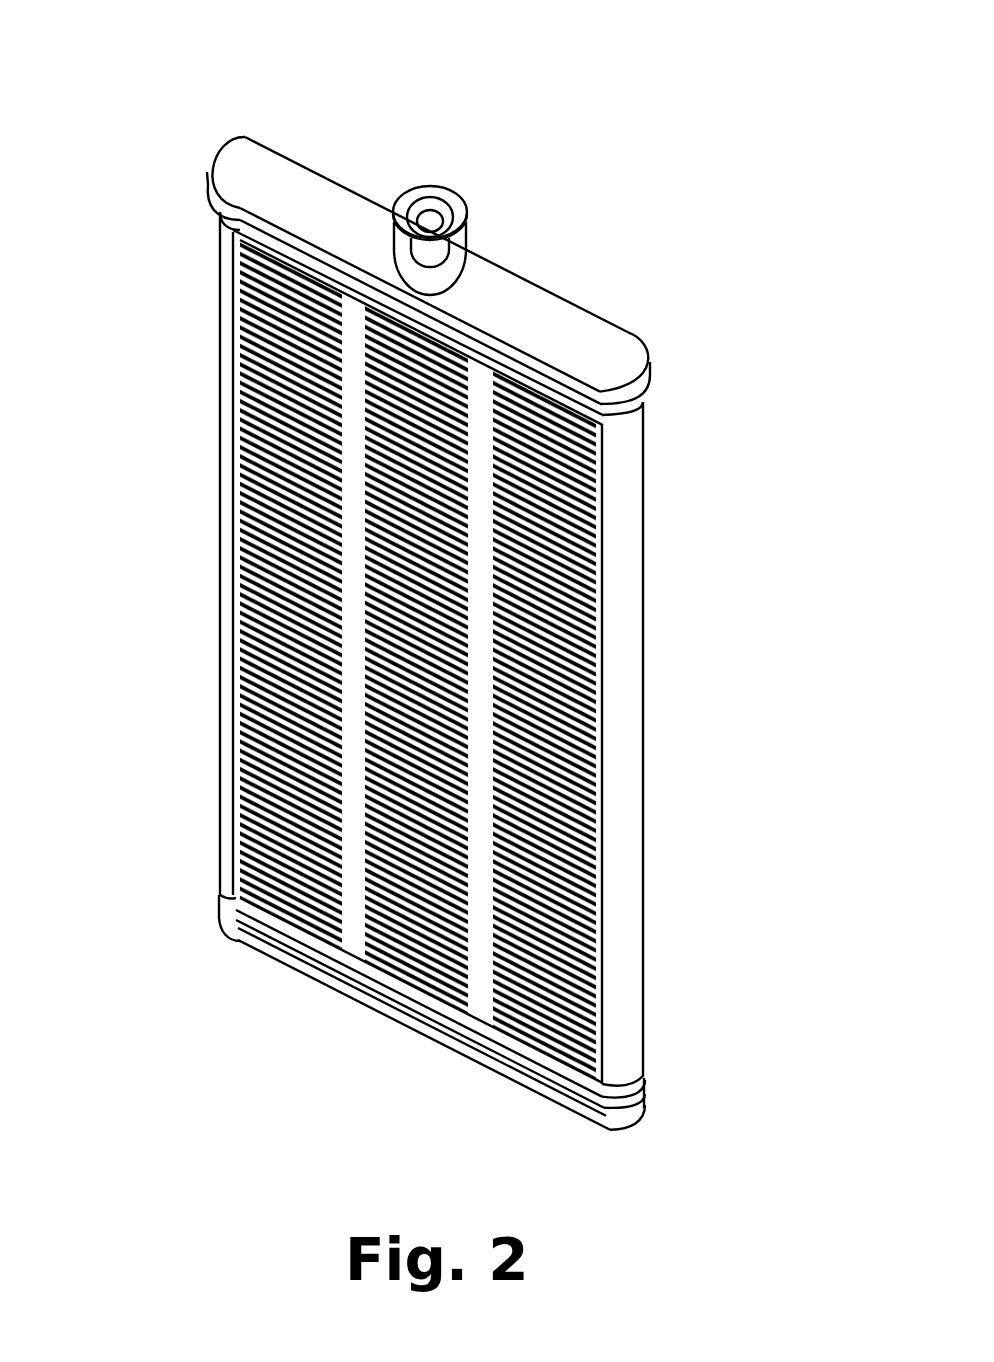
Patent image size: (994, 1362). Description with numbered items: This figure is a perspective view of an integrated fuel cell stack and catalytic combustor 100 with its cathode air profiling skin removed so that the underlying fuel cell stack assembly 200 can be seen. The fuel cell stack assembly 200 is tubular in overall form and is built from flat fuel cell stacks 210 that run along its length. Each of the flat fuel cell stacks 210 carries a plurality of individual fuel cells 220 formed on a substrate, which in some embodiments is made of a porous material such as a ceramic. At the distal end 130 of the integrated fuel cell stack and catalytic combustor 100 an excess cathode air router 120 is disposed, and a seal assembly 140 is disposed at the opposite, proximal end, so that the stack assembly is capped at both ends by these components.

The integrated fuel cell stack and catalytic combustor 100 is at (548, 87).
The excess cathode air router 120 is at (414, 206).
The distal end 130 is at (670, 375).
The seal assembly 140 is at (630, 1125).
The fuel cell stack assembly 200 is at (197, 374).
The flat fuel cell stacks 210 is at (272, 745).
The individual fuel cells 220 is at (585, 555).